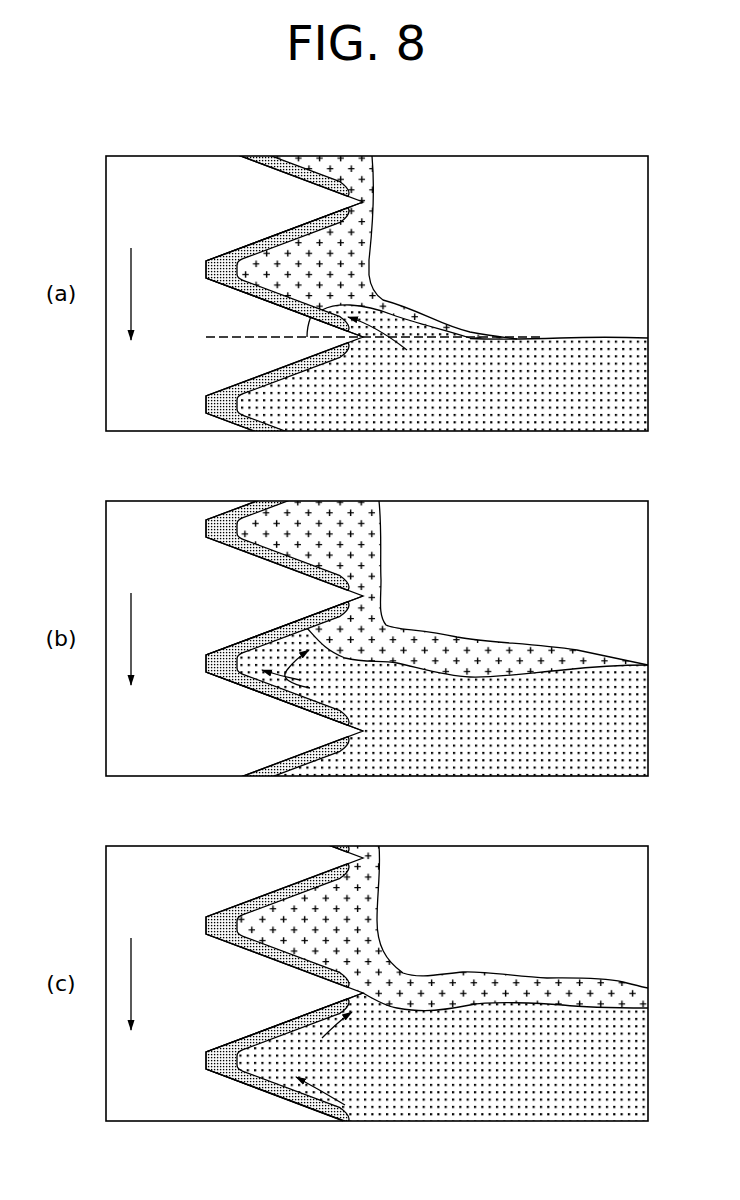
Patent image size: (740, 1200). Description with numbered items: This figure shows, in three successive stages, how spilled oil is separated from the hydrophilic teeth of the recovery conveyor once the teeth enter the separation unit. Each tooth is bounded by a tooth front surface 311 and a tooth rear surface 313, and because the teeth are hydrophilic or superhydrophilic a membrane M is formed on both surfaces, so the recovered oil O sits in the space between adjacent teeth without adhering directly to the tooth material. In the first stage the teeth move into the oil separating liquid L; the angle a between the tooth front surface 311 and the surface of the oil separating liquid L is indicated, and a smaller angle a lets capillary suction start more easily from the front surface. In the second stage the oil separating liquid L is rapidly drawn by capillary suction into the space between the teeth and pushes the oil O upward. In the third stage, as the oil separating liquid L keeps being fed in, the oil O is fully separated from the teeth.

The tooth front surface 311 is at (247, 290).
The tooth rear surface 313 is at (287, 232).
The membrane M is at (205, 268).
The oil O is at (370, 260).
The oil separating liquid L is at (587, 337).
The angle between the tooth front surface and the surface of the oil separating liqu a is at (374, 324).